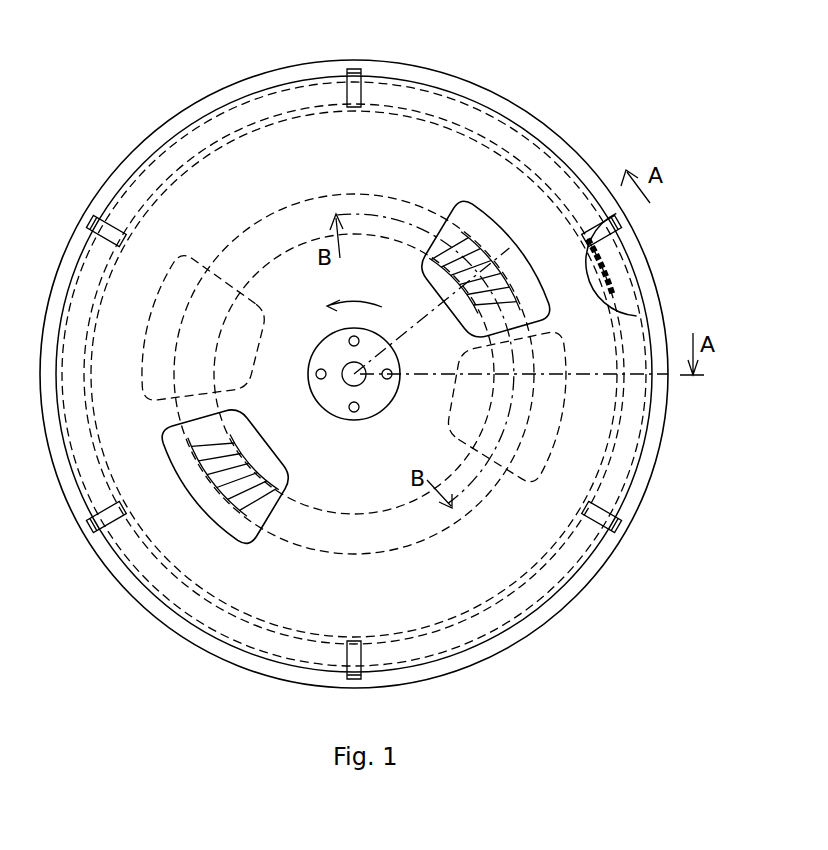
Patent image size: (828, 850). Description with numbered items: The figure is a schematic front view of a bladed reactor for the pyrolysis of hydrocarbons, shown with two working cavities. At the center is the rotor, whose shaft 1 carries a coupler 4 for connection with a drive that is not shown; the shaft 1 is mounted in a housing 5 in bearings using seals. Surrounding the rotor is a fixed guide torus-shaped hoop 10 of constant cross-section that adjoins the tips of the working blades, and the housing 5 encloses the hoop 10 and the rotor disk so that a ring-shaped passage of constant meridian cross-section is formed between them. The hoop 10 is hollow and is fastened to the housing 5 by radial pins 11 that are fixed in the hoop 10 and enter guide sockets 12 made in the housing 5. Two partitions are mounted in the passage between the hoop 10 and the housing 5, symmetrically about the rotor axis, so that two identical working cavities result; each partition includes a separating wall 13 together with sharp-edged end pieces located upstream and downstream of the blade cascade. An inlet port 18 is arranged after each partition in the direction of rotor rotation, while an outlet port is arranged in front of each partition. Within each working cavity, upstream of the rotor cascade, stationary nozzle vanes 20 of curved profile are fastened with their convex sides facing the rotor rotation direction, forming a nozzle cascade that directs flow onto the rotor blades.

The shaft 1 is at (354, 374).
The coupler 4 is at (330, 356).
The housing 5 is at (122, 182).
The guide torus-shaped hoop 10 is at (612, 288).
The radial pins 11 is at (355, 93).
The guide sockets 12 is at (618, 222).
The separating wall 13 is at (618, 266).
The inlet port 18 is at (473, 220).
The stationary nozzle vanes 20 is at (248, 496).